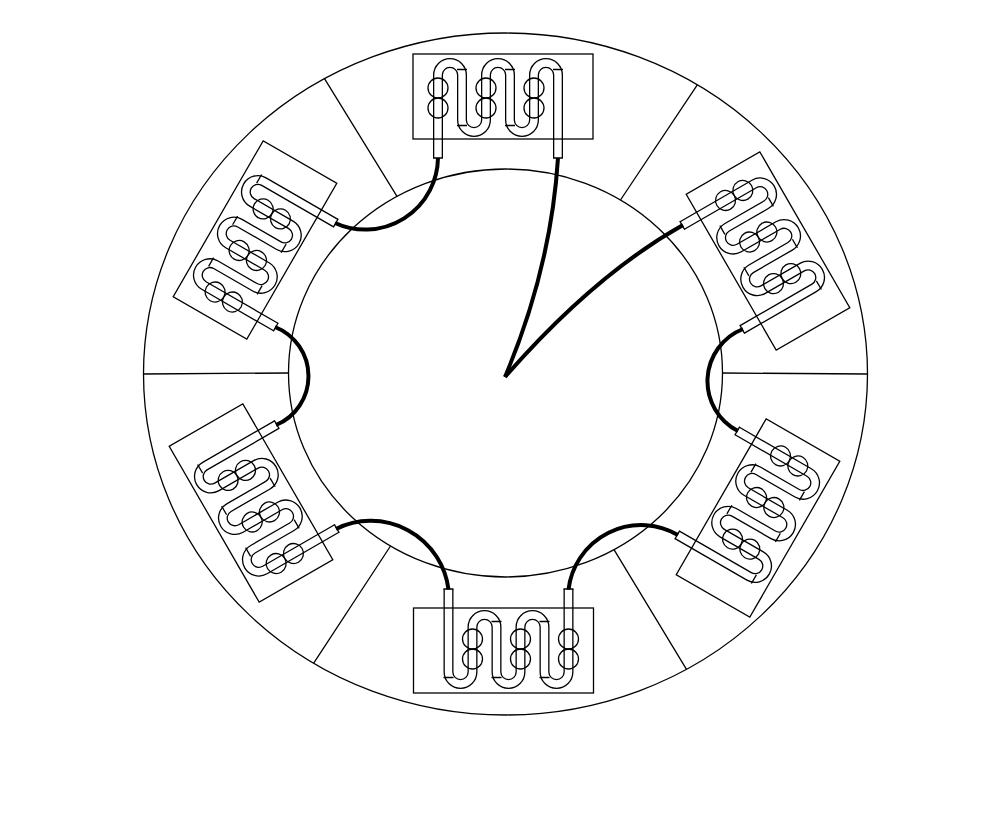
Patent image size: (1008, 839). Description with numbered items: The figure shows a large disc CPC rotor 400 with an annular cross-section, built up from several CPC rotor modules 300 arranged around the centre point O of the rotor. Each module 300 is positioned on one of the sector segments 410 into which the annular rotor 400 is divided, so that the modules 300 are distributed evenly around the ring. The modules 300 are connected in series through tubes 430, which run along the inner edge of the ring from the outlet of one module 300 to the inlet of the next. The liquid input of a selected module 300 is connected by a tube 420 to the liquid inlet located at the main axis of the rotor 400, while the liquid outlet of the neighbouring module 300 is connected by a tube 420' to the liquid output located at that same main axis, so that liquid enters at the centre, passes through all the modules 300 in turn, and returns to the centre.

The CPC rotor 400 is at (101, 65).
The CPC rotor module 300 is at (178, 280).
The sector segment 410 is at (380, 72).
The tube 420 is at (485, 267).
The tube 420' is at (594, 315).
The tube 430 is at (708, 377).